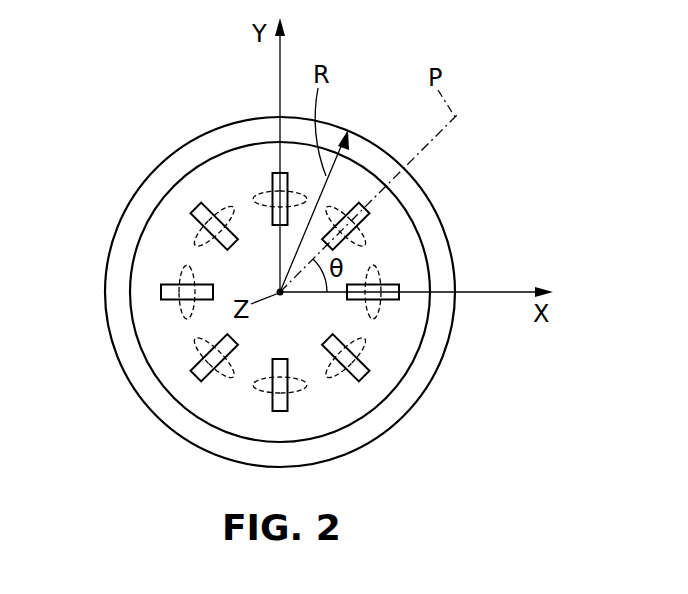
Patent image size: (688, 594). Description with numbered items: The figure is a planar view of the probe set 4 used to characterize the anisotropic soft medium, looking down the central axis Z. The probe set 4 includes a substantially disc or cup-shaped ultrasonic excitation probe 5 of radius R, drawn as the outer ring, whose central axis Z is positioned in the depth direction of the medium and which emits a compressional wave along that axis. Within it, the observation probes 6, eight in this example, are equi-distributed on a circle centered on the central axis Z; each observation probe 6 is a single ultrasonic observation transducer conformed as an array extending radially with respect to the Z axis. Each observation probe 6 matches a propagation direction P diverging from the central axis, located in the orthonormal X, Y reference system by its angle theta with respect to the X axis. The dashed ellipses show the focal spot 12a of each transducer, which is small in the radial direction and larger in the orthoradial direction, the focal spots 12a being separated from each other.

The probe set 4 is at (462, 140).
The excitation probe 5 is at (443, 250).
The observation probes 6 is at (285, 394).
The focal spot 12a is at (257, 195).